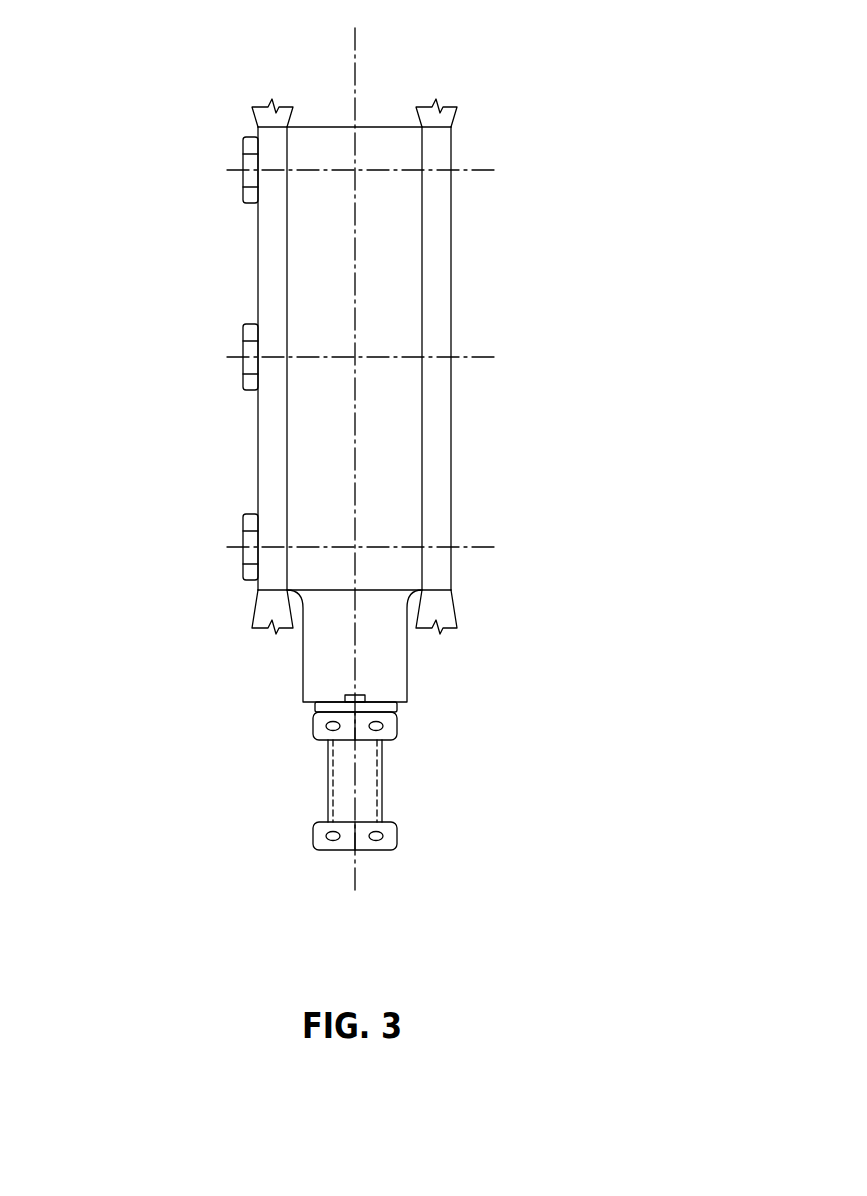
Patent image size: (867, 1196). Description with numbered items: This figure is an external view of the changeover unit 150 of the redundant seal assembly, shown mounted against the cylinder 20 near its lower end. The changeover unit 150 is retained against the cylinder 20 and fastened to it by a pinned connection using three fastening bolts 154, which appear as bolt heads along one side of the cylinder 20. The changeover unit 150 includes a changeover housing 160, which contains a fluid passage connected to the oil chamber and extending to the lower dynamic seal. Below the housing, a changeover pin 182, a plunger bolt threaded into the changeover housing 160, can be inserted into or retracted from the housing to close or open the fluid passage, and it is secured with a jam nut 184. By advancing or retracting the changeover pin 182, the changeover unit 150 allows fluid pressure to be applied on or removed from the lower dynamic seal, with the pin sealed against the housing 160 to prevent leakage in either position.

The changeover unit 150 is at (492, 311).
The cylinder 20 is at (451, 605).
The changeover housing 160 is at (370, 133).
The fastening bolts 154 is at (243, 155).
The jam nut 184 is at (403, 728).
The changeover pin 182 is at (403, 837).